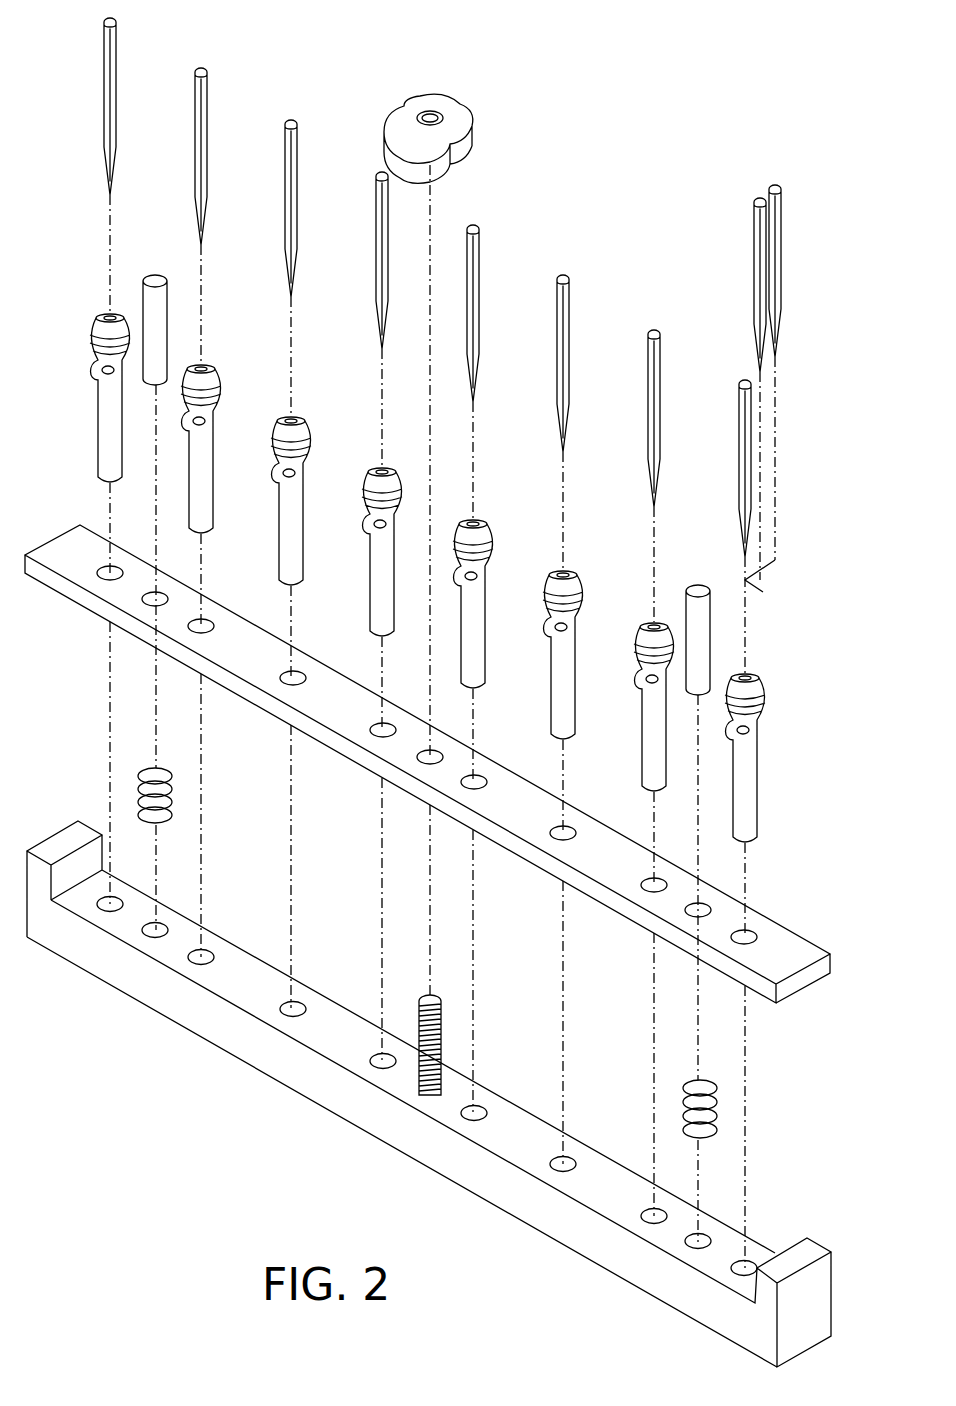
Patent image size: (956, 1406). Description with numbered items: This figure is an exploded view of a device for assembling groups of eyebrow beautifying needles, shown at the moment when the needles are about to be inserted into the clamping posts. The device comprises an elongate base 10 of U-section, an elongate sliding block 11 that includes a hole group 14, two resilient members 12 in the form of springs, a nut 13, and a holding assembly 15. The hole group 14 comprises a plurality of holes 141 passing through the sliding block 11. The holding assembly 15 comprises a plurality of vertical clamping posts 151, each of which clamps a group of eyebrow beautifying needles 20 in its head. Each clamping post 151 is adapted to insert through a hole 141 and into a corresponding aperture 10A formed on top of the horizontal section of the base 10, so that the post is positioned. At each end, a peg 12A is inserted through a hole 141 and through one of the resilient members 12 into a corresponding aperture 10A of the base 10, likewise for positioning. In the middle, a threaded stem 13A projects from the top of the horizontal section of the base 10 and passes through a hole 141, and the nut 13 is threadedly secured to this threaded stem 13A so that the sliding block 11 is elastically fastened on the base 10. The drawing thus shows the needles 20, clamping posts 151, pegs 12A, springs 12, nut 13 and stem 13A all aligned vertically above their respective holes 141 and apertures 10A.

The elongate base 10 is at (160, 993).
The aperture 10A is at (163, 925).
The elongate sliding block 11 is at (793, 960).
The resilient member 12 is at (177, 773).
The peg 12A is at (158, 275).
The nut 13 is at (455, 109).
The threaded stem 13A is at (436, 1000).
The hole group 14 is at (745, 937).
The hole 141 is at (753, 937).
The holding assembly 15 is at (477, 540).
The clamping post 151 is at (745, 780).
The eyebrow beautifying needles 20 is at (660, 333).